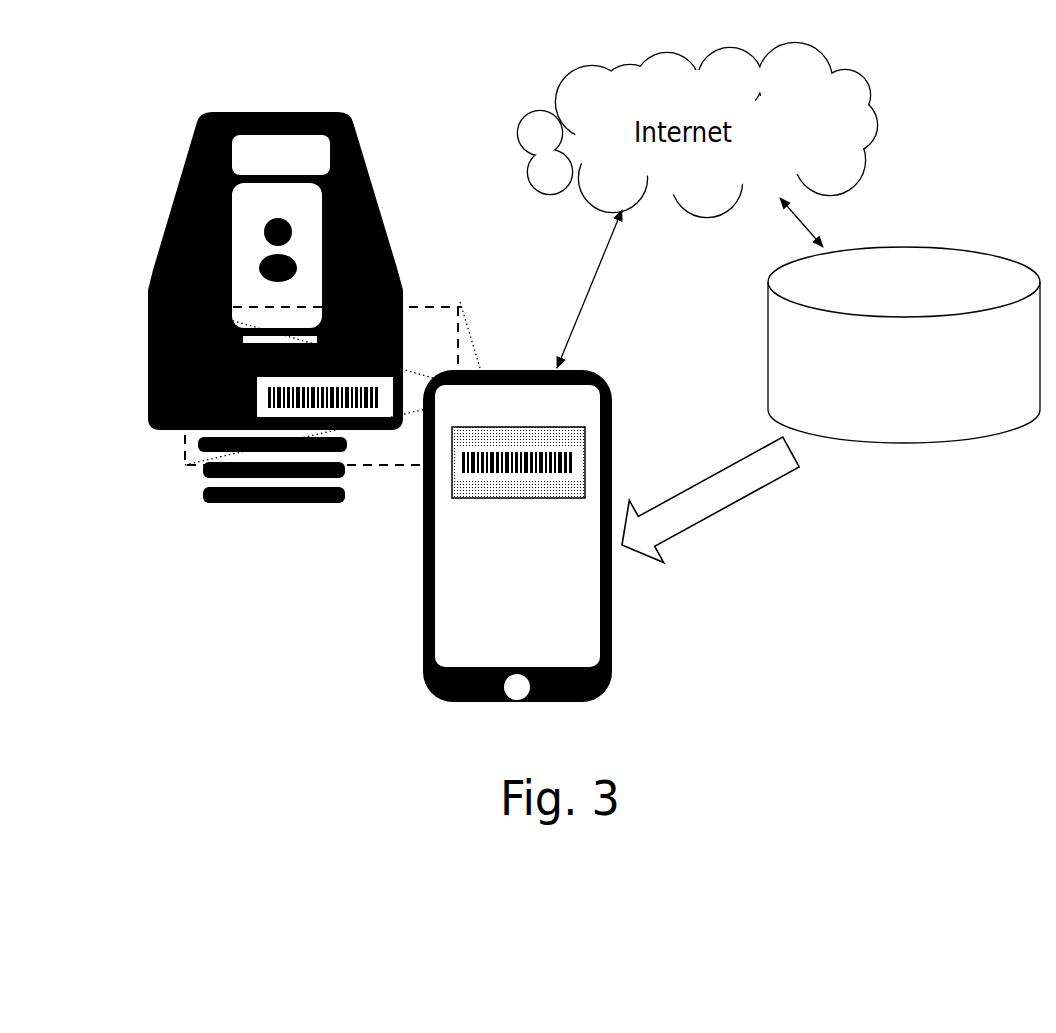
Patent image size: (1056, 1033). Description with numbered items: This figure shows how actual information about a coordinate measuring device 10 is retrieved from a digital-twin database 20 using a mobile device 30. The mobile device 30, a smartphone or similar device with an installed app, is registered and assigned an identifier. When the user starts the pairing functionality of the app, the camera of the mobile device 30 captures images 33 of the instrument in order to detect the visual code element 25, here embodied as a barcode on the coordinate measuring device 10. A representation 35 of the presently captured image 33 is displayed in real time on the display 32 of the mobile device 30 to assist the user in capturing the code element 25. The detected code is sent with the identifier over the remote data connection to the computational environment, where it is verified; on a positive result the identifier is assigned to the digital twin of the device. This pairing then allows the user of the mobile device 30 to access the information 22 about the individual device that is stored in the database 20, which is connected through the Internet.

The coordinate measuring device 10 is at (237, 90).
The digital-twin database 20 is at (953, 235).
The information 22 is at (727, 510).
The visual code element 25 is at (382, 390).
The mobile device 30 is at (405, 662).
The display 32 is at (445, 588).
The captured image 33 is at (183, 447).
The representation of the captured image 35 is at (577, 447).